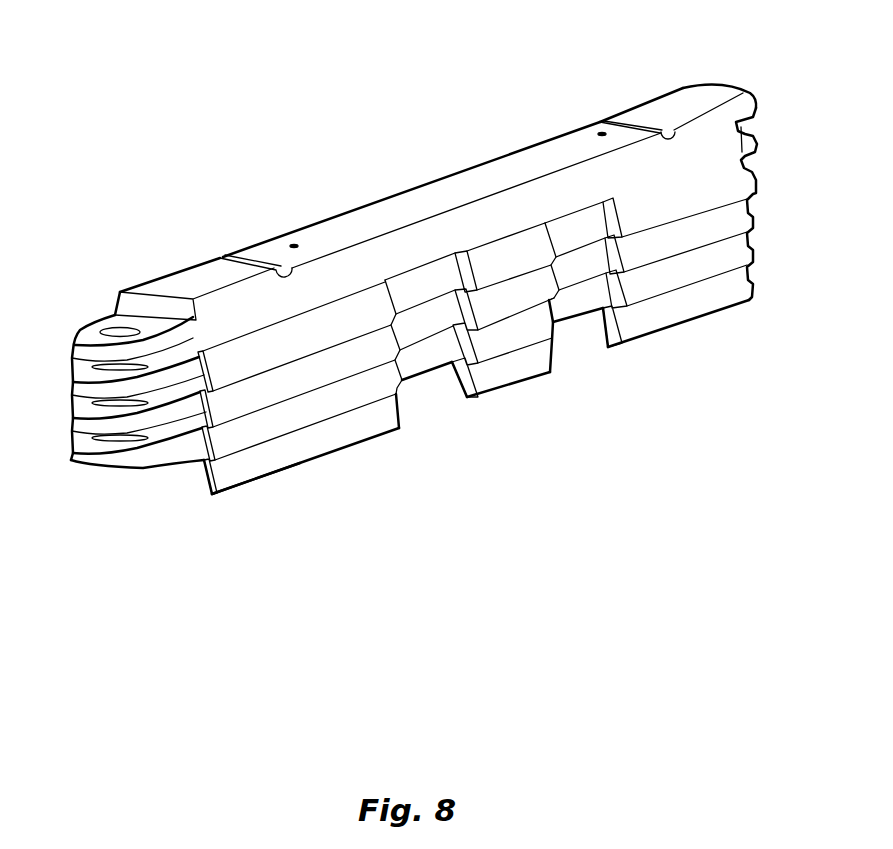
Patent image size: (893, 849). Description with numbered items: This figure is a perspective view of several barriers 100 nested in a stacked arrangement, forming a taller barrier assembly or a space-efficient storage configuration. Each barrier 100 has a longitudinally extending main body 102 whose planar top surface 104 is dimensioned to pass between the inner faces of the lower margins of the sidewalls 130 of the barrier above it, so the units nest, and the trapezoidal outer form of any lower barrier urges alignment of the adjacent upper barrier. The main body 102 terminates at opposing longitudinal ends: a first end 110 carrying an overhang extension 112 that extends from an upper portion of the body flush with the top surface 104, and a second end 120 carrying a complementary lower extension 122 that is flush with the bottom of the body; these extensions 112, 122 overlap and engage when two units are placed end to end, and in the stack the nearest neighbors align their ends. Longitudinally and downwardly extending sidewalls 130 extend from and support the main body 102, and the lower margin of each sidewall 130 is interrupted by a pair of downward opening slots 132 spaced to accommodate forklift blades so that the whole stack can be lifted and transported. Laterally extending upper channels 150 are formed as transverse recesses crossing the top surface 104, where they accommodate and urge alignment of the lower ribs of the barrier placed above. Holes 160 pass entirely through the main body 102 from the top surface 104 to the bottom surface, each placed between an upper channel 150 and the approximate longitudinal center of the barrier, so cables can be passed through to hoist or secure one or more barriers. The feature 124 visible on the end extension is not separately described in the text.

The barrier 100 is at (421, 289).
The main body 102 is at (498, 172).
The top surface 104 is at (377, 213).
The first end 110 is at (690, 107).
The overhang extension 112 is at (720, 103).
The second end 120 is at (178, 282).
The lower extension 122 is at (113, 457).
The hole 124 is at (119, 327).
The sidewalls 130 is at (303, 443).
The downward opening slots 132 is at (434, 272).
The upper channels 150 is at (217, 250).
The holes 160 is at (294, 242).